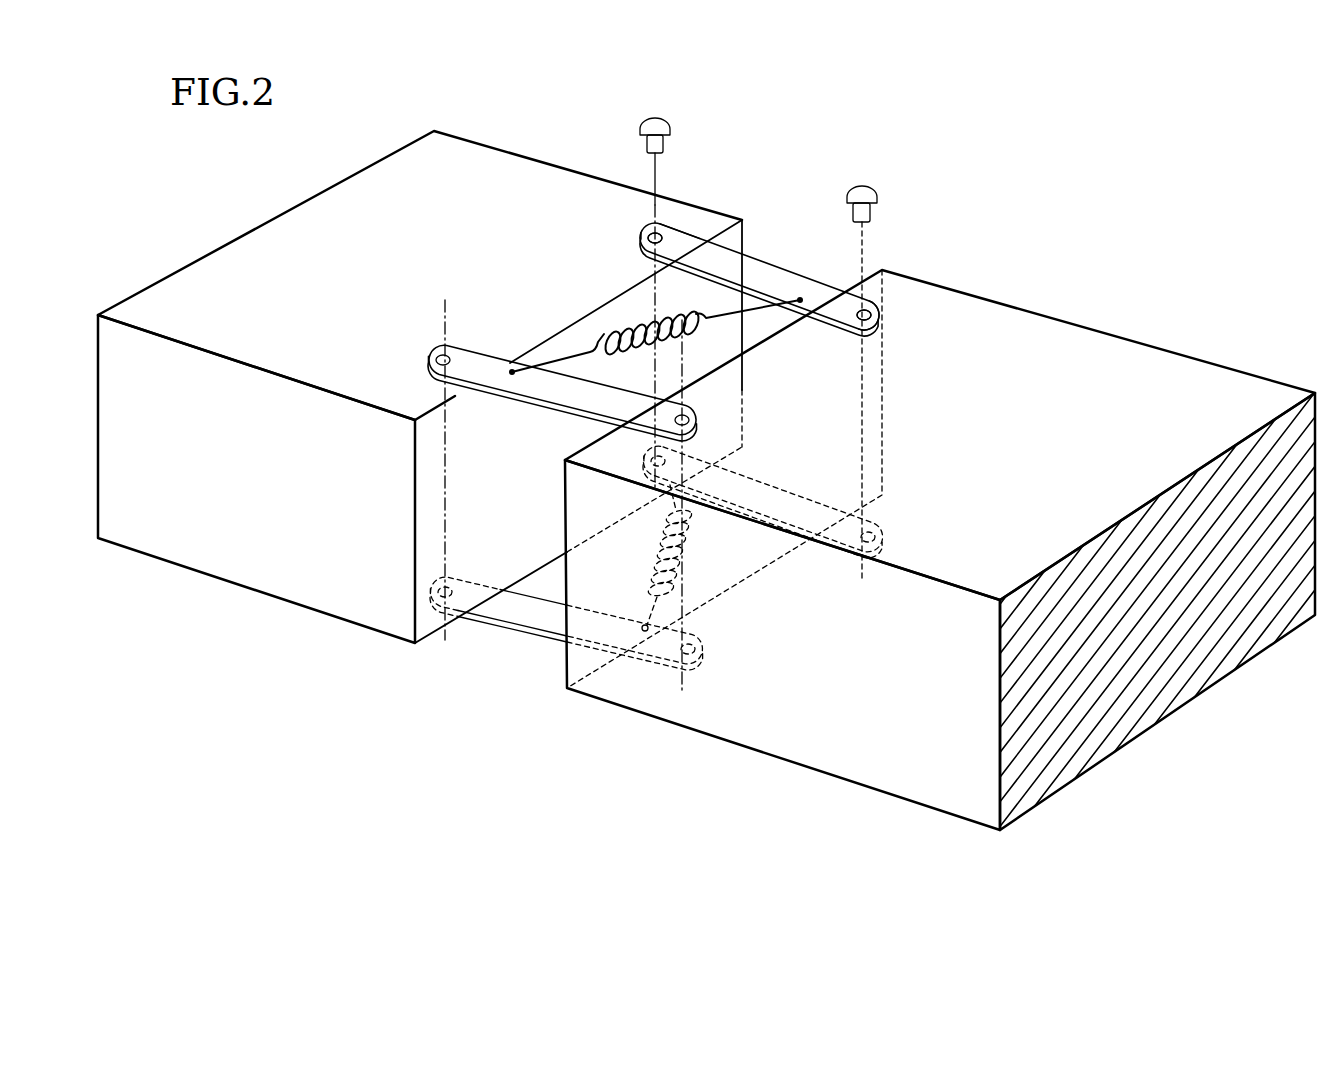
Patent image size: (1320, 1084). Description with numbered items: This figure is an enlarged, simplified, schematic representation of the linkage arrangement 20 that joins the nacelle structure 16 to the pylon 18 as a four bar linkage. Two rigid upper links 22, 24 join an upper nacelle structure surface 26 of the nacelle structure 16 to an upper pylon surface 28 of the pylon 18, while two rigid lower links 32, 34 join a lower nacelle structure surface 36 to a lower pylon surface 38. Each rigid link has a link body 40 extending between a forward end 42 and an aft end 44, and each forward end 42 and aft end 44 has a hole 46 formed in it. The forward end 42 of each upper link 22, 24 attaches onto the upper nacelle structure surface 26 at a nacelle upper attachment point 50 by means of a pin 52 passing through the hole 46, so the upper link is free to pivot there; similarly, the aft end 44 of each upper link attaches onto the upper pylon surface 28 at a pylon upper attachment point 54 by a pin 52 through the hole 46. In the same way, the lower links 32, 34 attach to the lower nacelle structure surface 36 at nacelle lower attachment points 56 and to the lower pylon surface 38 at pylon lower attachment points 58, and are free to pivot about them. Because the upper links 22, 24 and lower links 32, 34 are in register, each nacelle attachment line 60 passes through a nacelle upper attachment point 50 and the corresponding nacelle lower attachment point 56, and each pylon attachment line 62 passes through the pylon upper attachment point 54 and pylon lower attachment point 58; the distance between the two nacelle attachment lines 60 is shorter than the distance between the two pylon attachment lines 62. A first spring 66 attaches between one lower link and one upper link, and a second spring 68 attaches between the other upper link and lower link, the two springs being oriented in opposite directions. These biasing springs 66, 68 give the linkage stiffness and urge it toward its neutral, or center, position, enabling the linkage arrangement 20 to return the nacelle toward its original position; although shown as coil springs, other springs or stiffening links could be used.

The nacelle structure 16 is at (942, 636).
The pylon 18 is at (420, 372).
The linkage arrangement 20 is at (845, 84).
The upper link 22 is at (525, 402).
The upper link 24 is at (793, 257).
The upper nacelle structure surface 26 is at (1050, 449).
The upper pylon surface 28 is at (385, 268).
The lower link 32 is at (530, 620).
The lower link 34 is at (766, 490).
The lower nacelle structure surface 36 is at (778, 742).
The lower pylon surface 38 is at (258, 568).
The link body 40 is at (760, 272).
The forward end 42 is at (880, 316).
The aft end 44 is at (683, 236).
The hole 46 is at (640, 240).
The nacelle upper attachment point 50 is at (856, 308).
The pin 52 is at (862, 188).
The pylon upper attachment point 54 is at (648, 232).
The nacelle lower attachment point 56 is at (888, 536).
The pylon lower attachment point 58 is at (640, 455).
The nacelle attachment line 60 is at (866, 250).
The pylon attachment line 62 is at (658, 172).
The first spring 66 is at (652, 551).
The second spring 68 is at (622, 340).